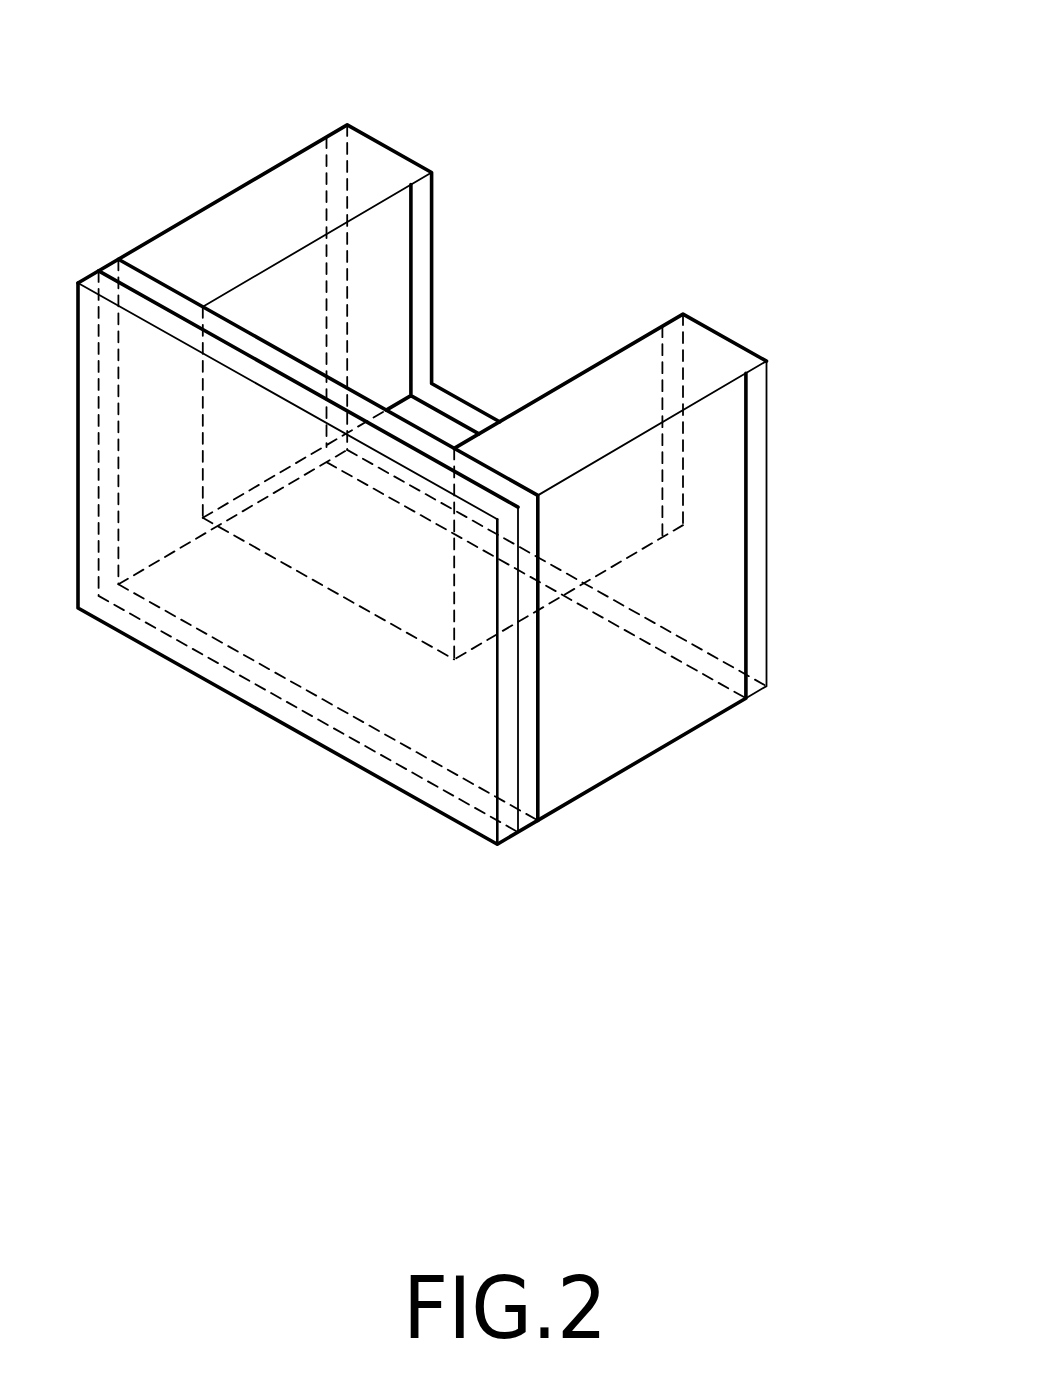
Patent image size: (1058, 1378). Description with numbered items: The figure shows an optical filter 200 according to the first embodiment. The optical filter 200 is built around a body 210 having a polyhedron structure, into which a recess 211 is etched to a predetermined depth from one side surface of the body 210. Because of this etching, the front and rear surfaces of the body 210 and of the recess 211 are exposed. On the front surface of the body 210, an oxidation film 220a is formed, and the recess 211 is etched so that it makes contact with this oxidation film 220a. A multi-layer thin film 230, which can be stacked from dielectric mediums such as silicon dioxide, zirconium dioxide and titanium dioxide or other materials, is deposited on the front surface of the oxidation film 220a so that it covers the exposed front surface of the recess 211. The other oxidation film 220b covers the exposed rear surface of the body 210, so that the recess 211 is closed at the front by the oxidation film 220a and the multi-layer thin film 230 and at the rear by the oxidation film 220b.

The optical filter 200 is at (500, 482).
The body 210 is at (678, 377).
The recess 211 is at (378, 290).
The oxidation film 220a is at (538, 825).
The oxidation film 220b is at (760, 533).
The multi-layer thin film 230 is at (504, 843).